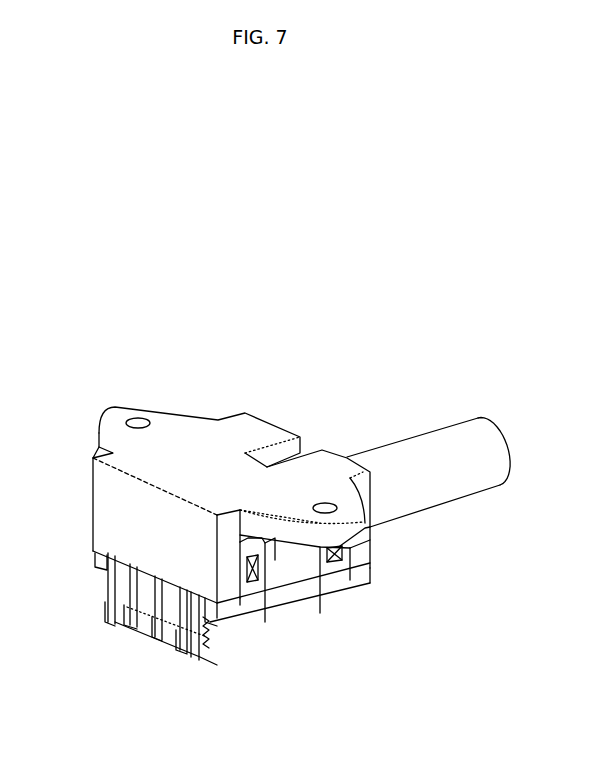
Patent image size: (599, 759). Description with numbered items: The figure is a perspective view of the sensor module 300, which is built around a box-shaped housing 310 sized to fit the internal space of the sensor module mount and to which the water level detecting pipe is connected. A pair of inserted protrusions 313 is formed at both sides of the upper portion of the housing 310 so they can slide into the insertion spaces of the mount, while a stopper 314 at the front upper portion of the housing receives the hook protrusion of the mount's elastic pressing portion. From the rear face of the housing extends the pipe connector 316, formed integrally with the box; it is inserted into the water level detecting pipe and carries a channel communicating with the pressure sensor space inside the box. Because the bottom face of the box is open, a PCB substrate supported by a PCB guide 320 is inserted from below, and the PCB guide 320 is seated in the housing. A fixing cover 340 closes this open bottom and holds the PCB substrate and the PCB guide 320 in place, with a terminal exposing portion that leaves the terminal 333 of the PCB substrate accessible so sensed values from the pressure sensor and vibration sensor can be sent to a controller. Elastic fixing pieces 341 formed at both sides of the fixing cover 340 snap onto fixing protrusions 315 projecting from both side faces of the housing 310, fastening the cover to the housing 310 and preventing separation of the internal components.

The sensor module 300 is at (100, 408).
The housing 310 is at (105, 484).
The inserted protrusions 313 is at (162, 415).
The stopper 314 is at (157, 487).
The fixing protrusions 315 is at (250, 600).
The pipe connector 316 is at (402, 452).
The PCB guide 320 is at (302, 563).
The terminal 333 is at (168, 630).
The fixing cover 340 is at (342, 592).
The elastic fixing pieces 341 is at (260, 585).